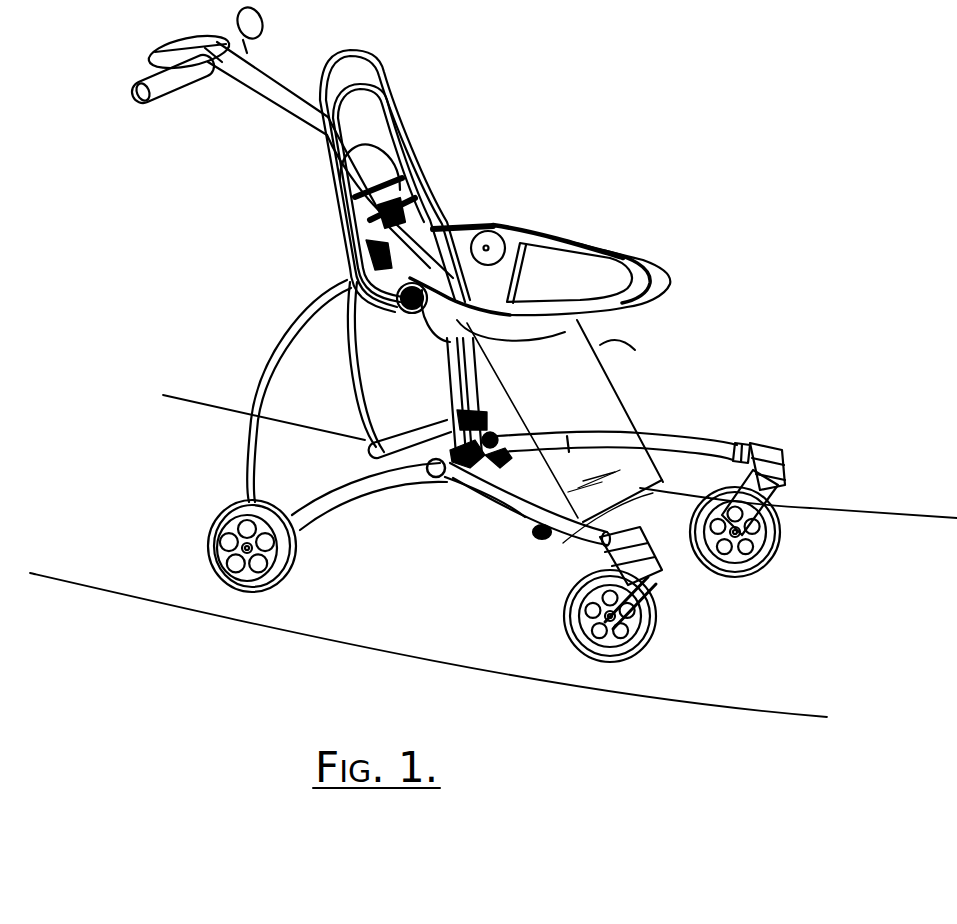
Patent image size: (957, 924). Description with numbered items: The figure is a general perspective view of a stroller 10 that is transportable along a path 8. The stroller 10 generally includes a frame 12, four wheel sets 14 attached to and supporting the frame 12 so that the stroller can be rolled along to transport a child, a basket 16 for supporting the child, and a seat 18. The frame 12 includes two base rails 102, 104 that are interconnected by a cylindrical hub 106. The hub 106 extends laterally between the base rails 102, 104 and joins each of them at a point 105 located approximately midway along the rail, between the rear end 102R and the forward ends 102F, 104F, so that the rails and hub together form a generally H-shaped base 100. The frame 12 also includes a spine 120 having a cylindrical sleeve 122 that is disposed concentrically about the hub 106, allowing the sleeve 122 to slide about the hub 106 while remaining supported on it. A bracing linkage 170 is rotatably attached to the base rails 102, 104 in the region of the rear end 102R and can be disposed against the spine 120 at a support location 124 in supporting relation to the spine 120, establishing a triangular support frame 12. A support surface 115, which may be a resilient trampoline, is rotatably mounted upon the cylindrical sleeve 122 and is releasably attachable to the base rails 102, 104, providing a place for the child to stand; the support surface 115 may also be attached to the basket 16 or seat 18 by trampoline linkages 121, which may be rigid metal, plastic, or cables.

The stroller 10 is at (585, 32).
The frame 12 is at (284, 232).
The support location 124 is at (363, 252).
The basket 16 is at (648, 263).
The seat 18 is at (535, 328).
The bracing linkage 170 is at (263, 362).
The spine 120 is at (445, 373).
The trampoline linkages 121 is at (633, 350).
The point 105 is at (540, 410).
The base rail 104 is at (603, 432).
The forward end 104F is at (708, 440).
The cylindrical hub 106 is at (388, 480).
The base rail 102 is at (477, 510).
The H-shaped base 100 is at (514, 574).
The rear end 102R is at (369, 542).
The forward end 102F is at (553, 572).
The cylindrical sleeve 122 is at (502, 460).
The support surface 115 is at (607, 490).
The wheel sets 14 is at (763, 553).
The path 8 is at (770, 688).